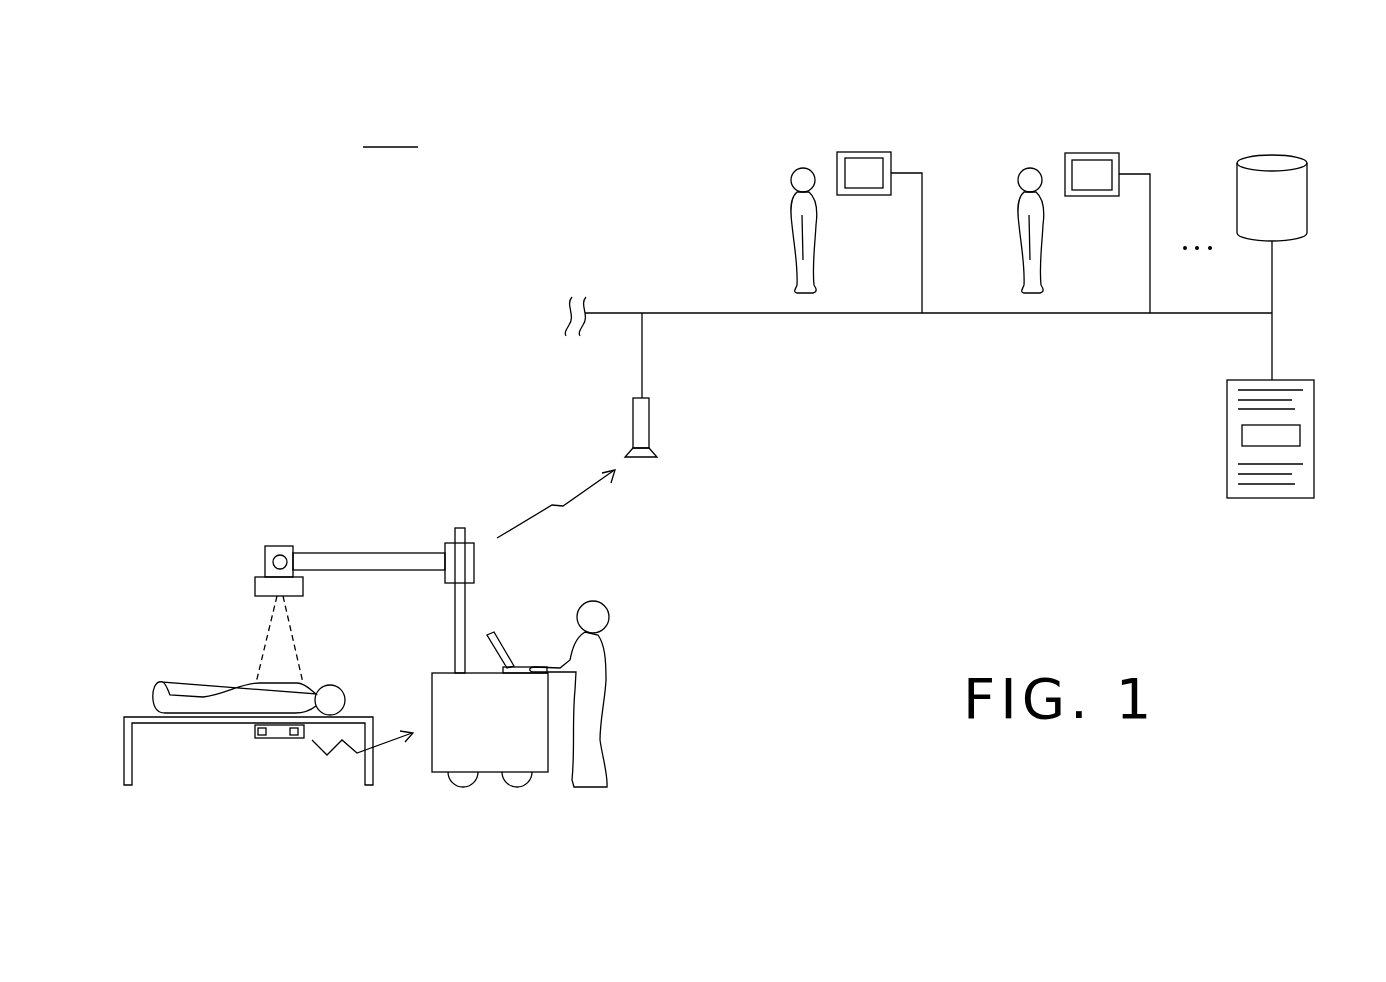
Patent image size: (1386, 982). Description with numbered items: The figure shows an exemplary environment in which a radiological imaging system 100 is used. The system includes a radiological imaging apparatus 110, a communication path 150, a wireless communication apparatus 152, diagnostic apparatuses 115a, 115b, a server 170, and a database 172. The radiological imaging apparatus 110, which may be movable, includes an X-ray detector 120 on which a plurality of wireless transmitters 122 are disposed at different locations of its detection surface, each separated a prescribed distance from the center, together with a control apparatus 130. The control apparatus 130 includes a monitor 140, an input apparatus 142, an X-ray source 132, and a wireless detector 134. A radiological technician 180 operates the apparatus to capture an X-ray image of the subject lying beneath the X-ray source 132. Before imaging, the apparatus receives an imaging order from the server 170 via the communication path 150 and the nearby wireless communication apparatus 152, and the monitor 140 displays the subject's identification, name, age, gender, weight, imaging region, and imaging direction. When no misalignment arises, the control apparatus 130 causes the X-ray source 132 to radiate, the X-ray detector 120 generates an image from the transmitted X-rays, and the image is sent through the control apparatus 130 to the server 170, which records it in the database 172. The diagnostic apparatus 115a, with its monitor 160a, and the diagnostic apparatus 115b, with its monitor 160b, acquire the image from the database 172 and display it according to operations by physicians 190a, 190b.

The radiological imaging system 100 is at (390, 133).
The radiological imaging apparatus 110 is at (476, 504).
The diagnostic apparatus 115a is at (918, 173).
The diagnostic apparatus 115b is at (1147, 173).
The X-ray detector 120 is at (250, 731).
The wireless transmitter 122 is at (298, 740).
The control apparatus 130 is at (420, 682).
The X-ray source 132 is at (279, 548).
The wireless detector 134 is at (270, 600).
The monitor 140 is at (488, 632).
The input apparatus 142 is at (518, 665).
The communication path 150 is at (742, 318).
The wireless communication apparatus 152 is at (651, 415).
The monitor 160a is at (860, 150).
The monitor 160b is at (1090, 152).
The server 170 is at (1227, 488).
The database 172 is at (1300, 155).
The radiological technician 180 is at (609, 676).
The physician 190a is at (800, 166).
The physician 190b is at (1027, 166).